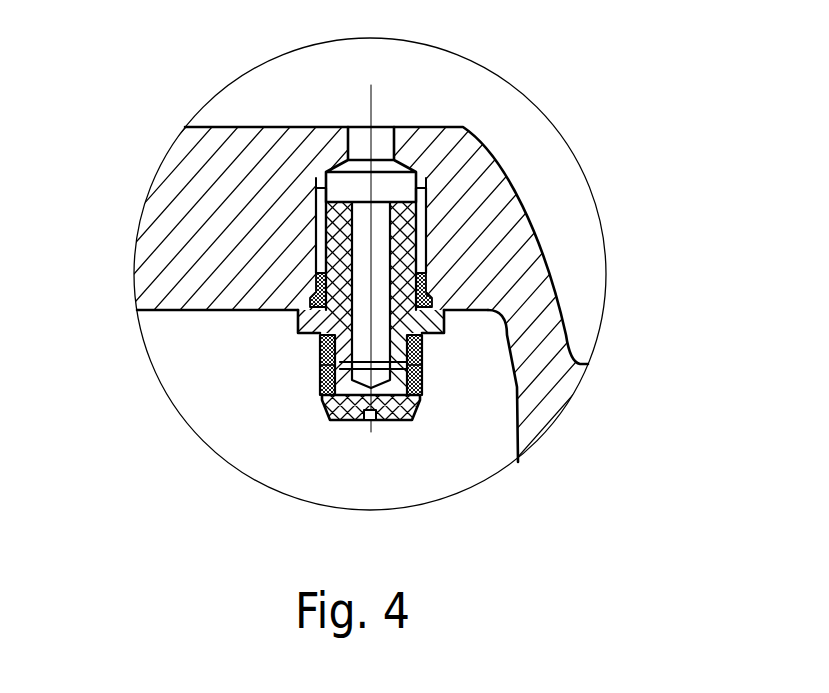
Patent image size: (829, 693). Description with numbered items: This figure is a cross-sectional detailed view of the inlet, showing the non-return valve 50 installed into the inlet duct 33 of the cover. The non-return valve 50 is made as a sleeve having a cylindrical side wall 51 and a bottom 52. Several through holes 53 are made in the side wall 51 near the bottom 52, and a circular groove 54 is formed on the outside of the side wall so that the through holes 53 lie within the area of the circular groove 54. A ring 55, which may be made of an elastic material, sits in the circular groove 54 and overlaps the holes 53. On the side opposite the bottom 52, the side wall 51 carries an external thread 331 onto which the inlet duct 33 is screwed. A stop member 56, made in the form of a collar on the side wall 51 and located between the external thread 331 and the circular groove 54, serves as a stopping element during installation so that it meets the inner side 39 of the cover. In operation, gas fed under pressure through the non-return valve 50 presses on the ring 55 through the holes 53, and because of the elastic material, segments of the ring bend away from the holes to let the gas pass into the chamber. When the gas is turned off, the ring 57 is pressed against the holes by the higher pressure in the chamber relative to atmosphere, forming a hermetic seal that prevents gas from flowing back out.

The inlet duct 33 is at (400, 185).
The external thread 331 is at (425, 240).
The inner side of cover 39 is at (207, 310).
The non-return valve 50 is at (320, 192).
The cylindrical side wall 51 is at (318, 237).
The bottom 52 is at (337, 417).
The through holes 53 is at (320, 373).
The circular groove 54 is at (427, 397).
The ring 55 is at (415, 347).
The stop member 56 is at (297, 327).
The ring 57 is at (313, 288).